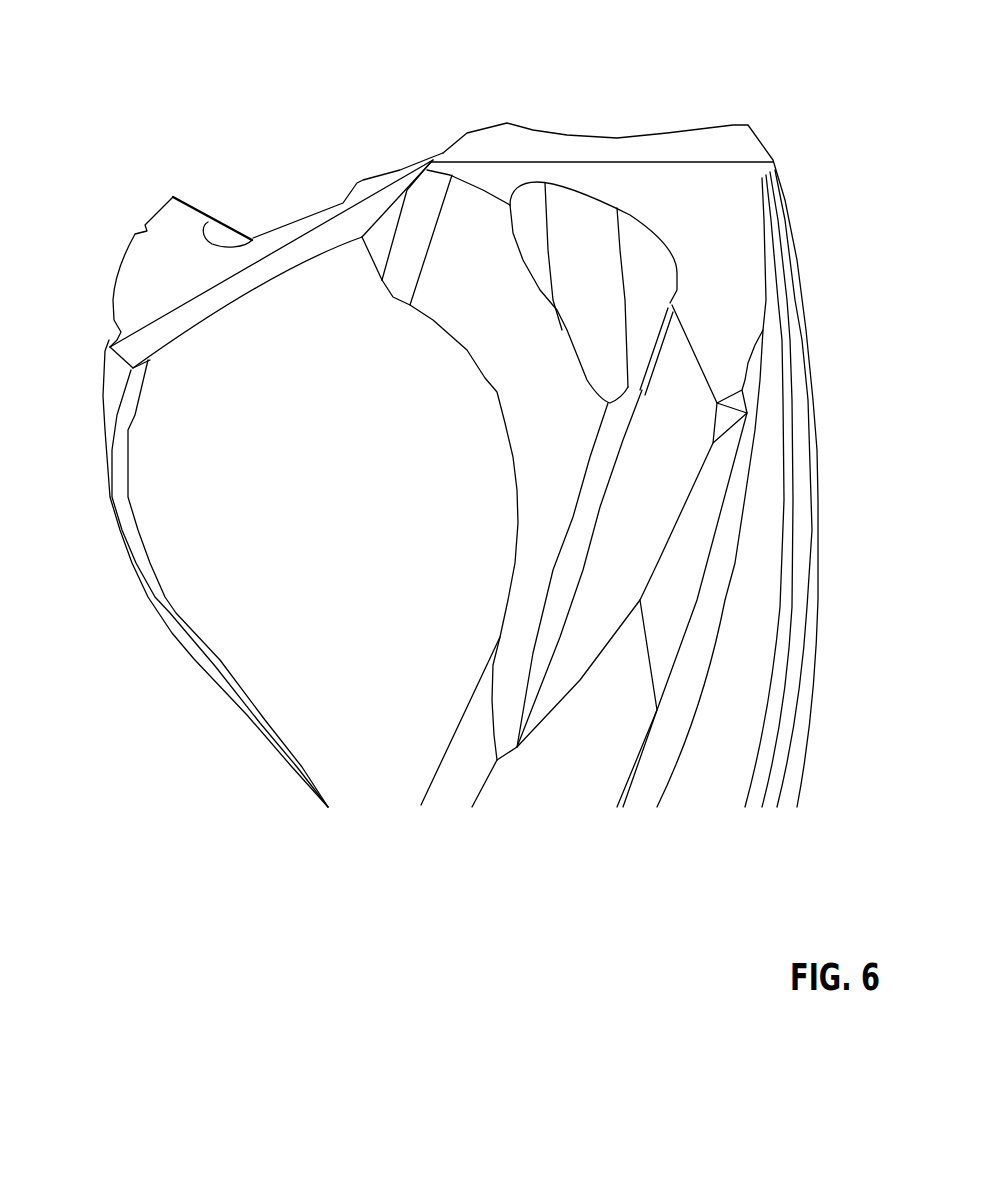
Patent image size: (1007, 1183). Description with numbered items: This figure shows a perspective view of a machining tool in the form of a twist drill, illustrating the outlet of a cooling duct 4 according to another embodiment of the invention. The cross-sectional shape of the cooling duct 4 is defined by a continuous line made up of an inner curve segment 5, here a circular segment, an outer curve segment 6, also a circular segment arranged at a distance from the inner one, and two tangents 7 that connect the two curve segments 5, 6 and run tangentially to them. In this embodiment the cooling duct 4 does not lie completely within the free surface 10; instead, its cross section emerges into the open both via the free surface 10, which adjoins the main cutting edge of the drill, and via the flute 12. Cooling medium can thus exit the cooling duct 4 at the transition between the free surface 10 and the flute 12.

The humerus 4 is at (600, 323).
The glenoid 5 is at (533, 215).
The humeral head 6 is at (677, 272).
The articular cartilage 7 is at (577, 192).
The acromion 10 is at (733, 204).
The deltoid muscle 12 is at (422, 137).